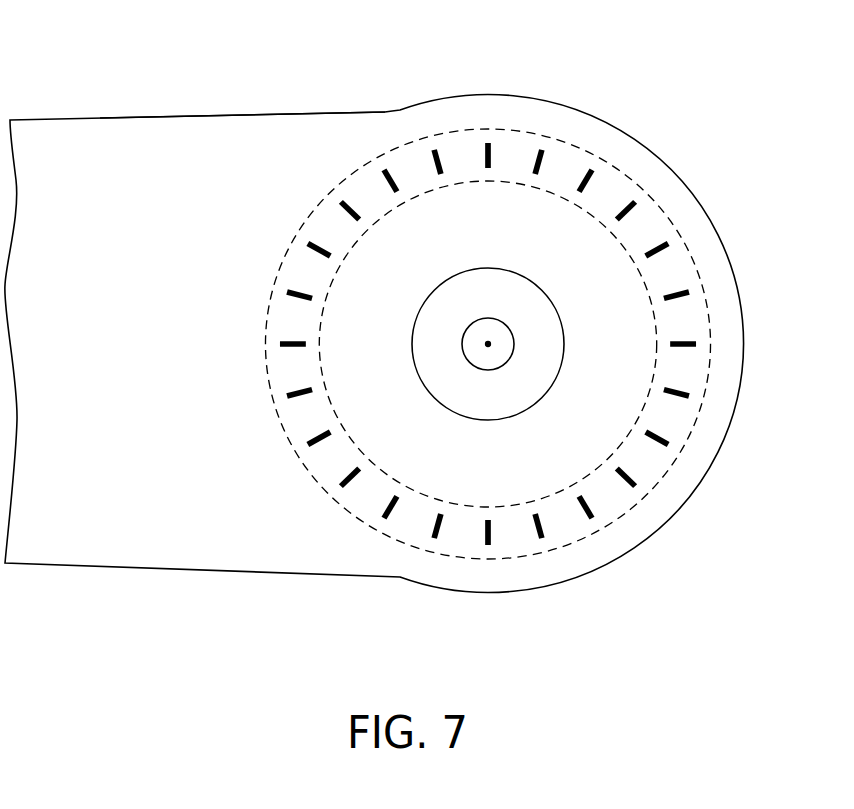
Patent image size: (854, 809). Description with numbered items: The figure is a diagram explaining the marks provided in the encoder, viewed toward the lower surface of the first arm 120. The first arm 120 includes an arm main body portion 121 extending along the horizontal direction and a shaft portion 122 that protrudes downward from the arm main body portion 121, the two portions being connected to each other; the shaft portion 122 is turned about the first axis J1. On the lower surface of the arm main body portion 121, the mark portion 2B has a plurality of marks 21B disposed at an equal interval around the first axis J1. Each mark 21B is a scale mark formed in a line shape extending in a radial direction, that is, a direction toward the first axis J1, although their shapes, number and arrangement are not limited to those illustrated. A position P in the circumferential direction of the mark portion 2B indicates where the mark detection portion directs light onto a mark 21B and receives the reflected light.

The first arm 120 is at (153, 118).
The arm main body portion 121 is at (229, 117).
The mark portion 2B is at (601, 146).
The mark 21B is at (491, 150).
The position P is at (708, 348).
The first axis J1 is at (488, 344).
The shaft portion 122 is at (517, 414).